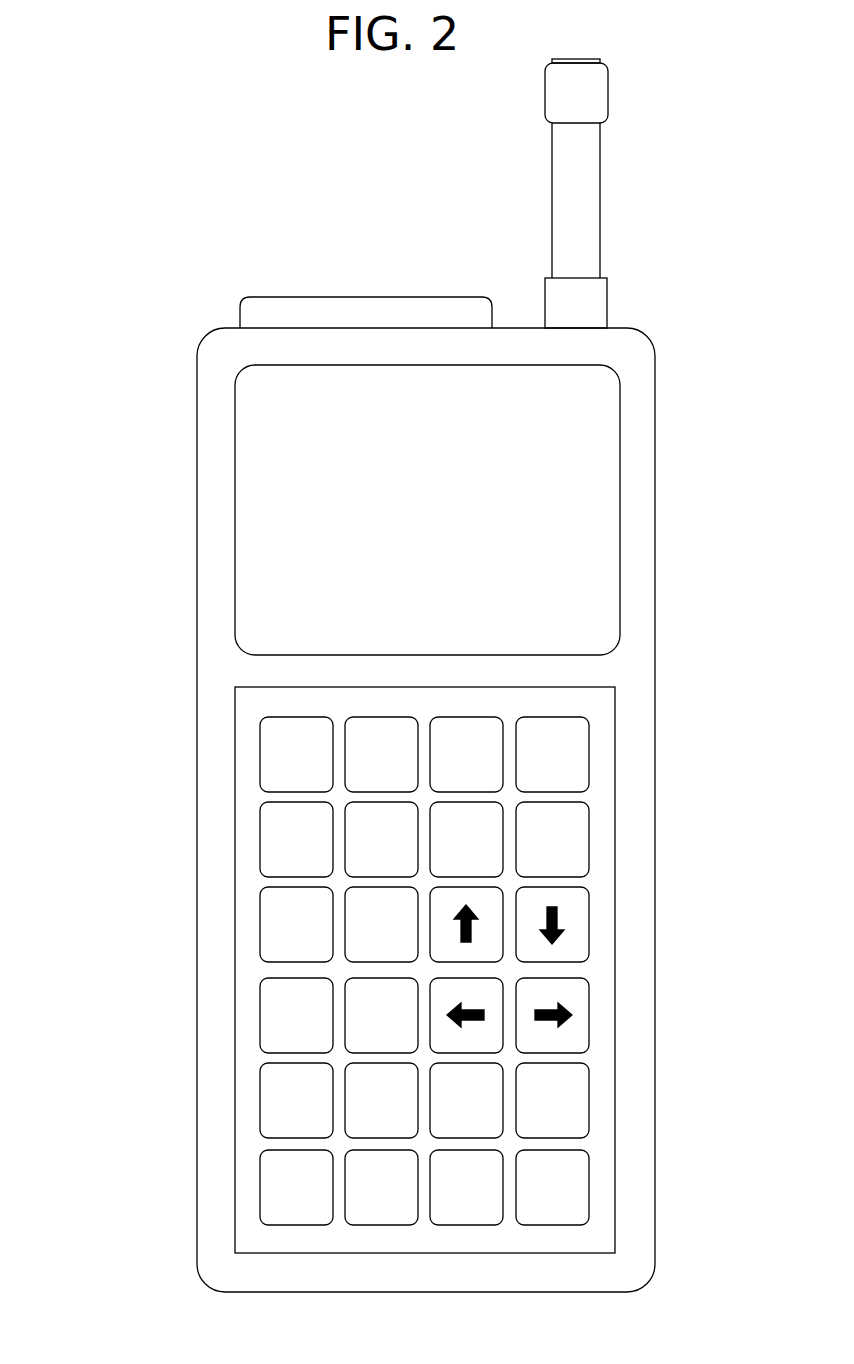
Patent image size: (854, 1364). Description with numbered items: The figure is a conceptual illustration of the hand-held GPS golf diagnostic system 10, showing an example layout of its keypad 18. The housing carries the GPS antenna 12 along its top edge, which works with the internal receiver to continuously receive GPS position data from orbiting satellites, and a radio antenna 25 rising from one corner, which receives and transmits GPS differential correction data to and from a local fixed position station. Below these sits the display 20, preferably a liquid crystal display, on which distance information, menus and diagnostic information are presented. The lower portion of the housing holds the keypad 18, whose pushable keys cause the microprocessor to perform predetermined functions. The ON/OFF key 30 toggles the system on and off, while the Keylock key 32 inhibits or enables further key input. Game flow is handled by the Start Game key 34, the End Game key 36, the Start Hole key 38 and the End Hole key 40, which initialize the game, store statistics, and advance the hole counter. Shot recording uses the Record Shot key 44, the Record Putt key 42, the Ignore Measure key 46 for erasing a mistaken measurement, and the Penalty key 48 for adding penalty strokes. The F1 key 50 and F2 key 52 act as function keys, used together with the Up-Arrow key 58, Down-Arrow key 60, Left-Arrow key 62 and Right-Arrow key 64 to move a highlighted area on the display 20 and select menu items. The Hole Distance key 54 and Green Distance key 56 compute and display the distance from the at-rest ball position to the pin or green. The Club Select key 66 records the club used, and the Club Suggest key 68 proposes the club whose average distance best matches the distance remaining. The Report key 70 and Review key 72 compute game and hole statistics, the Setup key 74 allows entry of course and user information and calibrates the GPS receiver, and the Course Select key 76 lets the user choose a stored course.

The diagnostic system 10 is at (152, 592).
The GPS antenna 12 is at (373, 296).
The keypad 18 is at (587, 1243).
The display 20 is at (585, 512).
The radio antenna 25 is at (600, 192).
The ON/OFF key 30 is at (260, 1096).
The Keylock key 32 is at (260, 1188).
The Start Game key 34 is at (260, 1006).
The End Game key 36 is at (382, 978).
The Start Hole key 38 is at (260, 923).
The End Hole key 40 is at (382, 887).
The Record Putt key 42 is at (260, 831).
The Record Shot key 44 is at (260, 748).
The Ignore Measure key 46 is at (382, 717).
The Penalty key 48 is at (382, 802).
The F1 key 50 is at (468, 717).
The F2 key 52 is at (590, 756).
The Hole Distance key 54 is at (590, 847).
The Green Distance key 56 is at (468, 802).
The Up-Arrow key 58 is at (468, 887).
The Down-Arrow key 60 is at (590, 930).
The Left-Arrow key 62 is at (468, 978).
The Right-Arrow key 64 is at (590, 1022).
The Club Select key 66 is at (468, 1063).
The Club Suggest key 68 is at (590, 1105).
The Report key 70 is at (468, 1150).
The Review key 72 is at (590, 1197).
The Setup key 74 is at (382, 1150).
The Course Select key 76 is at (382, 1063).